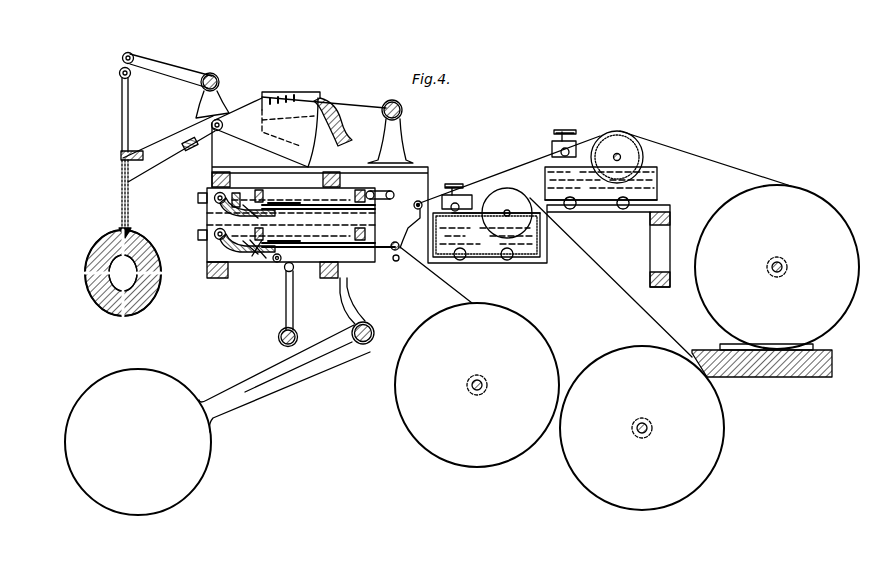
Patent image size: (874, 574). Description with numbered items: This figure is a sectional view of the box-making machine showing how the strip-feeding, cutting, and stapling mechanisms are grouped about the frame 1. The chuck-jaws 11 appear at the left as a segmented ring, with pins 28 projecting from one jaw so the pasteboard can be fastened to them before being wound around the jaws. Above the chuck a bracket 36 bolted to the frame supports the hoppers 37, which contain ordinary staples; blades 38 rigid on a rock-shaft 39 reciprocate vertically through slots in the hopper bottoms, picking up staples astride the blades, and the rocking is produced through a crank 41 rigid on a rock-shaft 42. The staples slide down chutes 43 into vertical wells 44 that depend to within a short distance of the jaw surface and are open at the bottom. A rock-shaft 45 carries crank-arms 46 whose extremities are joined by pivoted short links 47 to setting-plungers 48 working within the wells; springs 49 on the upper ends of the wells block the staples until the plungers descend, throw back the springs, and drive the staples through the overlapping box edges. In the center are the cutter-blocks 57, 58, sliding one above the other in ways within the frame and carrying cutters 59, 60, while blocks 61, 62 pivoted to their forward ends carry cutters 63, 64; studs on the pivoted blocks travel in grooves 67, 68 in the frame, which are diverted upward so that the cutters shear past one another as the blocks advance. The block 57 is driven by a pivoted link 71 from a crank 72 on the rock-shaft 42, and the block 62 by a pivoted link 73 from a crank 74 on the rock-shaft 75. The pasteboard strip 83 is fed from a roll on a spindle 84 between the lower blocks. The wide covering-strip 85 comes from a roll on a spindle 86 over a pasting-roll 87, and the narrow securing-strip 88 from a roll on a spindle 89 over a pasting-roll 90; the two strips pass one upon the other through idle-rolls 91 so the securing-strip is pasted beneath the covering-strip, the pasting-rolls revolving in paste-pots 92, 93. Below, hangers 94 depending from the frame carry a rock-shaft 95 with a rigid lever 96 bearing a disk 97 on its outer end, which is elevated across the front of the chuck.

The frame 1 is at (428, 166).
The chuck-jaws 11 is at (165, 310).
The pins 28 is at (121, 230).
The bracket 36 is at (335, 124).
The hoppers 37 is at (270, 92).
The blades 38 is at (265, 132).
The rock-shaft 39 is at (221, 120).
The crank 41 is at (352, 104).
The rock-shaft 42 is at (400, 108).
The chutes 43 is at (170, 160).
The wells 44 is at (120, 186).
The rock-shaft 45 is at (215, 76).
The crank-arms 46 is at (155, 66).
The links 47 is at (123, 60).
The setting-plungers 48 is at (120, 100).
The springs 49 is at (119, 156).
The cutter-block 57 is at (292, 192).
The cutter-block 58 is at (330, 238).
The cutter 59 is at (252, 192).
The cutter 60 is at (208, 245).
The block 61 is at (208, 208).
The block 62 is at (208, 256).
The cutter 63 is at (208, 219).
The cutter 64 is at (262, 262).
The groove 67 is at (414, 208).
The groove 68 is at (380, 257).
The link 71 is at (368, 192).
The crank 72 is at (400, 138).
The link 73 is at (278, 266).
The crank 74 is at (285, 318).
The rock-shaft 75 is at (277, 338).
The pasteboard strip 83 is at (486, 252).
The spindle 84 is at (488, 386).
The covering-strip 85 is at (735, 170).
The spindle 86 is at (784, 268).
The pasting-roll 87 is at (632, 140).
The securing-strip 88 is at (640, 288).
The spindle 89 is at (652, 428).
The pasting-roll 90 is at (545, 256).
The idle-rolls 91 is at (440, 184).
The paste-pot 92 is at (660, 176).
The paste-pot 93 is at (540, 230).
The hangers 94 is at (350, 297).
The rock-shaft 95 is at (374, 328).
The lever 96 is at (280, 374).
The disk 97 is at (138, 442).